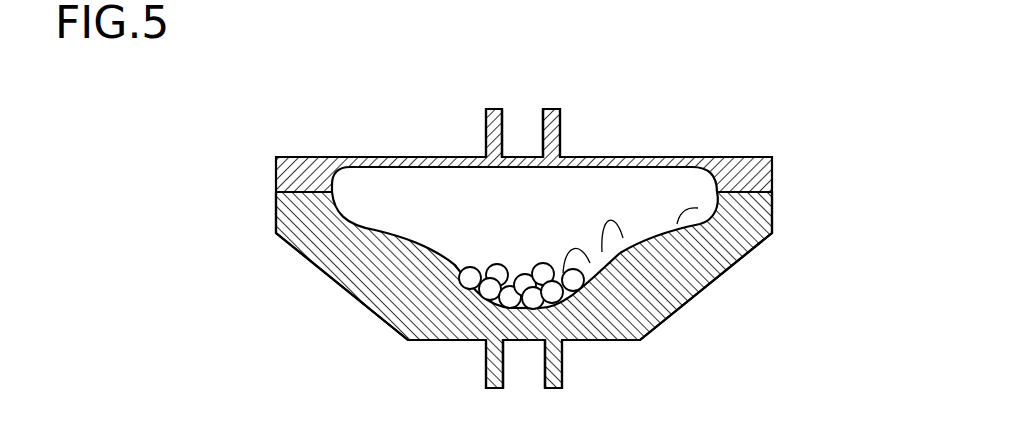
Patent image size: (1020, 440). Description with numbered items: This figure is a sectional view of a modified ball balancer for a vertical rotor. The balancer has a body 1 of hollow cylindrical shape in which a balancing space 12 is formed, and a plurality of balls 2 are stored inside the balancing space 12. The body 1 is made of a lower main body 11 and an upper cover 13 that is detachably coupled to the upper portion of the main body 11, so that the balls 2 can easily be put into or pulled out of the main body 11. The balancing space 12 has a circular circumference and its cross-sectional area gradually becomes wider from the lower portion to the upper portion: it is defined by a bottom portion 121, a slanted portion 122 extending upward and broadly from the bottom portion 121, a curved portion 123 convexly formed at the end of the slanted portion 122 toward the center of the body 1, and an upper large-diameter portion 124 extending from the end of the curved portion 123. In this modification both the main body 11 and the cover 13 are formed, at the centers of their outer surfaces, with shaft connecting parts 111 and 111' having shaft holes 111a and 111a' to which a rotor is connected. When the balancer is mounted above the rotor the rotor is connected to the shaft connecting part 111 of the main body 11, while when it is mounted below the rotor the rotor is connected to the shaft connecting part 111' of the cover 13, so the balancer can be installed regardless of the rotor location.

The body 1 is at (186, 176).
The balls 2 is at (469, 272).
The main body 11 is at (276, 217).
The cover 13 is at (276, 176).
The balancing space 12 is at (832, 310).
The bottom portion 121 is at (577, 300).
The slanted portion 122 is at (628, 300).
The curved portion 123 is at (640, 272).
The upper large-diameter portion 124 is at (688, 239).
The shaft connecting part 111 is at (462, 376).
The shaft hole 111a is at (560, 385).
The shaft connecting part 111' is at (592, 125).
The shaft hole 111a' is at (560, 108).